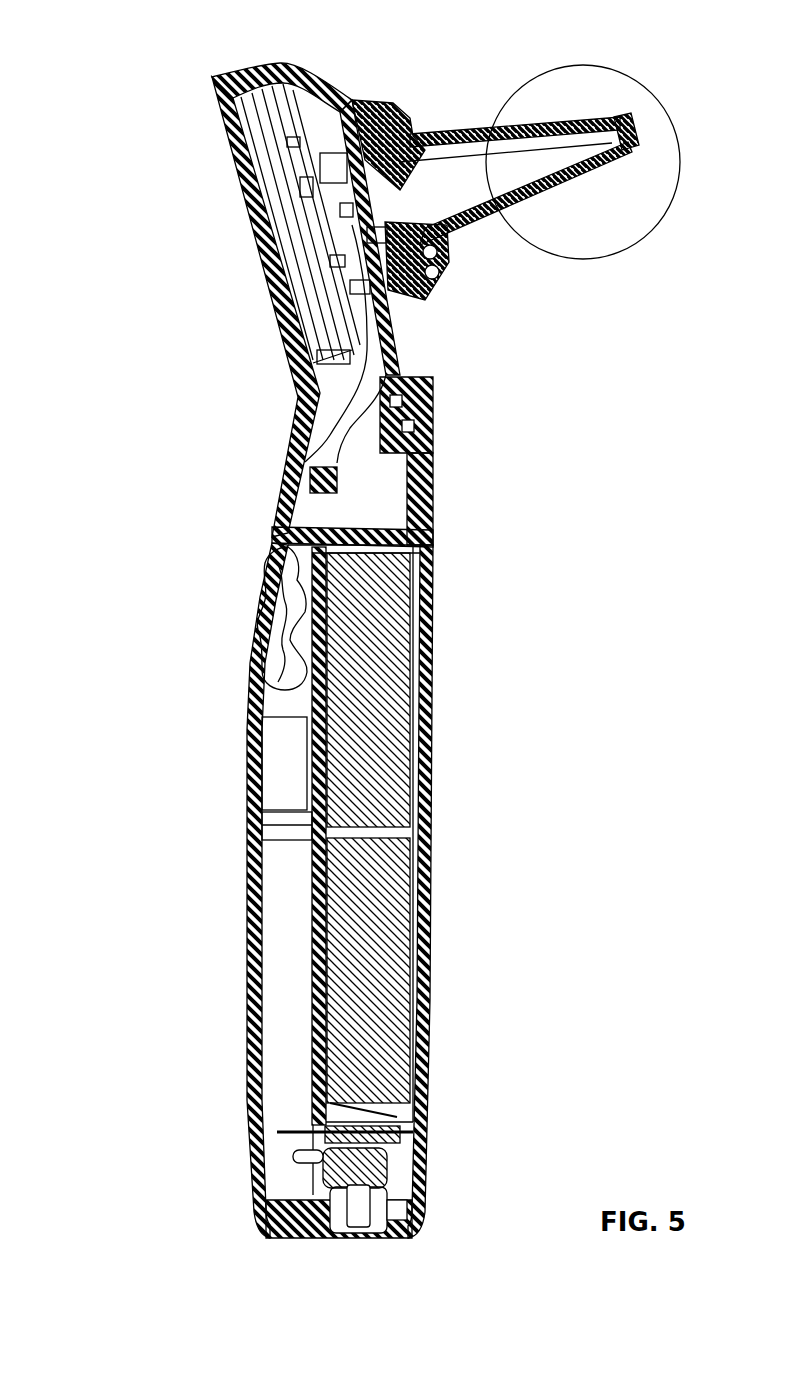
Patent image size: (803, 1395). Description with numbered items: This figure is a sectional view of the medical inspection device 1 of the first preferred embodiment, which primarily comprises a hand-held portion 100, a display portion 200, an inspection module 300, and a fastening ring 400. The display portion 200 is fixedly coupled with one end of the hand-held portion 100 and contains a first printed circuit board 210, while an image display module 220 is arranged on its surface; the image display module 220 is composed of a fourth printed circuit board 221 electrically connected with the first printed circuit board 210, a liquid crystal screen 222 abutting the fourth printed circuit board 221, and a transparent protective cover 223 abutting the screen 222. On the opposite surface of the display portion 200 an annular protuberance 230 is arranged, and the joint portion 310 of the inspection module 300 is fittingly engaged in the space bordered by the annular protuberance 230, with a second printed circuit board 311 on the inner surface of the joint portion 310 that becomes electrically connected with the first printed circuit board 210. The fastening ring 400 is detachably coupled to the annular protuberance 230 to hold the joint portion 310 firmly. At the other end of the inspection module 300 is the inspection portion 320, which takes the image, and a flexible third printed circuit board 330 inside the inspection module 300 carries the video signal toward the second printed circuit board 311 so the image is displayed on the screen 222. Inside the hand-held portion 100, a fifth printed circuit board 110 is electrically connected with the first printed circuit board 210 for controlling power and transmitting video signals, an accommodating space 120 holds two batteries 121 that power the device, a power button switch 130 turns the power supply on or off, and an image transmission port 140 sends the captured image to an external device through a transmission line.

The medical inspection device 1 is at (137, 130).
The hand-held portion 100 is at (250, 1053).
The fifth printed circuit board 110 is at (310, 940).
The accommodating space 120 is at (417, 832).
The batteries 121 is at (410, 713).
The power button switch 130 is at (263, 580).
The image transmission port 140 is at (370, 1233).
The display portion 200 is at (314, 97).
The first printed circuit board 210 is at (400, 360).
The image display module 220 is at (237, 224).
The fourth printed circuit board 221 is at (258, 238).
The screen 222 is at (260, 267).
The transparent protective cover 223 is at (267, 303).
The annular protuberance 230 is at (383, 102).
The inspection module 300 is at (474, 212).
The joint portion 310 is at (447, 243).
The second printed circuit board 311 is at (392, 186).
The inspection portion 320 is at (634, 137).
The third printed circuit board 330 is at (470, 212).
The fastening ring 400 is at (428, 268).